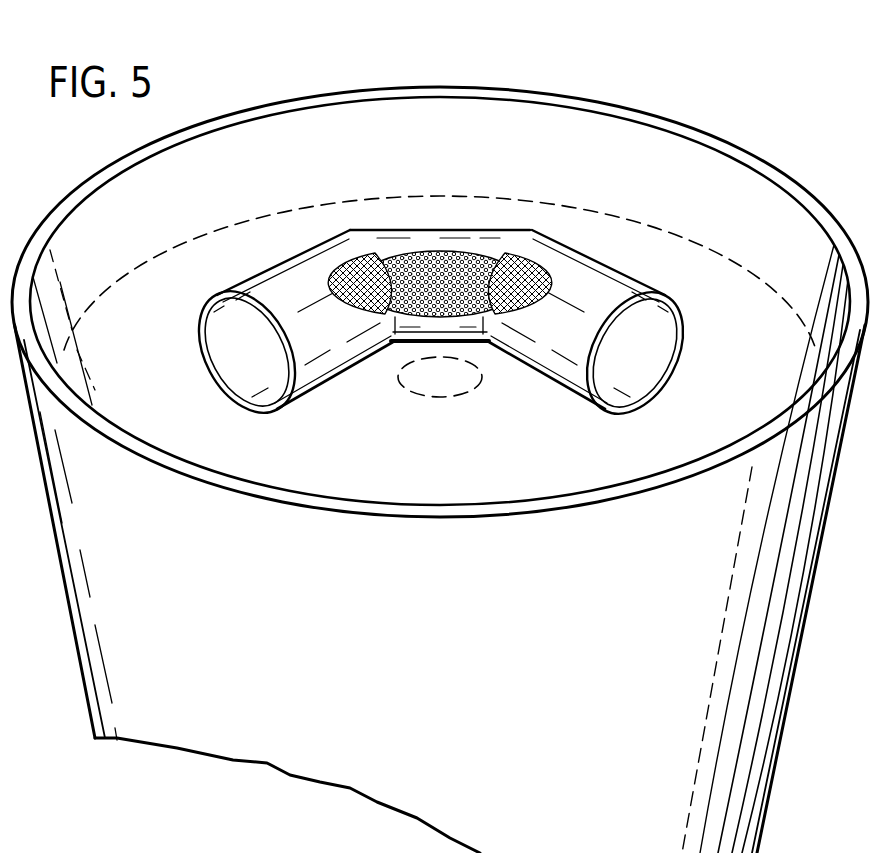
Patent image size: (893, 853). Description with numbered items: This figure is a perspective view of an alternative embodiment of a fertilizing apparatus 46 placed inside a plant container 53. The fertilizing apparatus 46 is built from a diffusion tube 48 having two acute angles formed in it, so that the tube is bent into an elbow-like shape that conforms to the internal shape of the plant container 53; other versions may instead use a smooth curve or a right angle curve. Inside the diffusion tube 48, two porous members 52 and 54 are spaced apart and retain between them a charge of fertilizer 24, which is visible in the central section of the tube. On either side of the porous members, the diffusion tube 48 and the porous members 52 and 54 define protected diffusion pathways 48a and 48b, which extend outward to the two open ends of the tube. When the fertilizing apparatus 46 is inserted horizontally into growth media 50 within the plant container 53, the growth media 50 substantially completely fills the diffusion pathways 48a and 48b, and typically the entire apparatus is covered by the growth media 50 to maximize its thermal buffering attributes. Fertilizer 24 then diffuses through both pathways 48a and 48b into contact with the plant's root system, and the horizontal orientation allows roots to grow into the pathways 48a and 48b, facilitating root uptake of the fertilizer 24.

The fertilizer 24 is at (440, 237).
The fertilizing apparatus 46 is at (440, 294).
The diffusion tube 48 is at (440, 315).
The protected diffusion pathway 48a is at (398, 352).
The protected diffusion pathway 48b is at (603, 406).
The growth media 50 is at (722, 292).
The porous member 52 is at (366, 252).
The plant container 53 is at (470, 90).
The porous member 54 is at (512, 252).